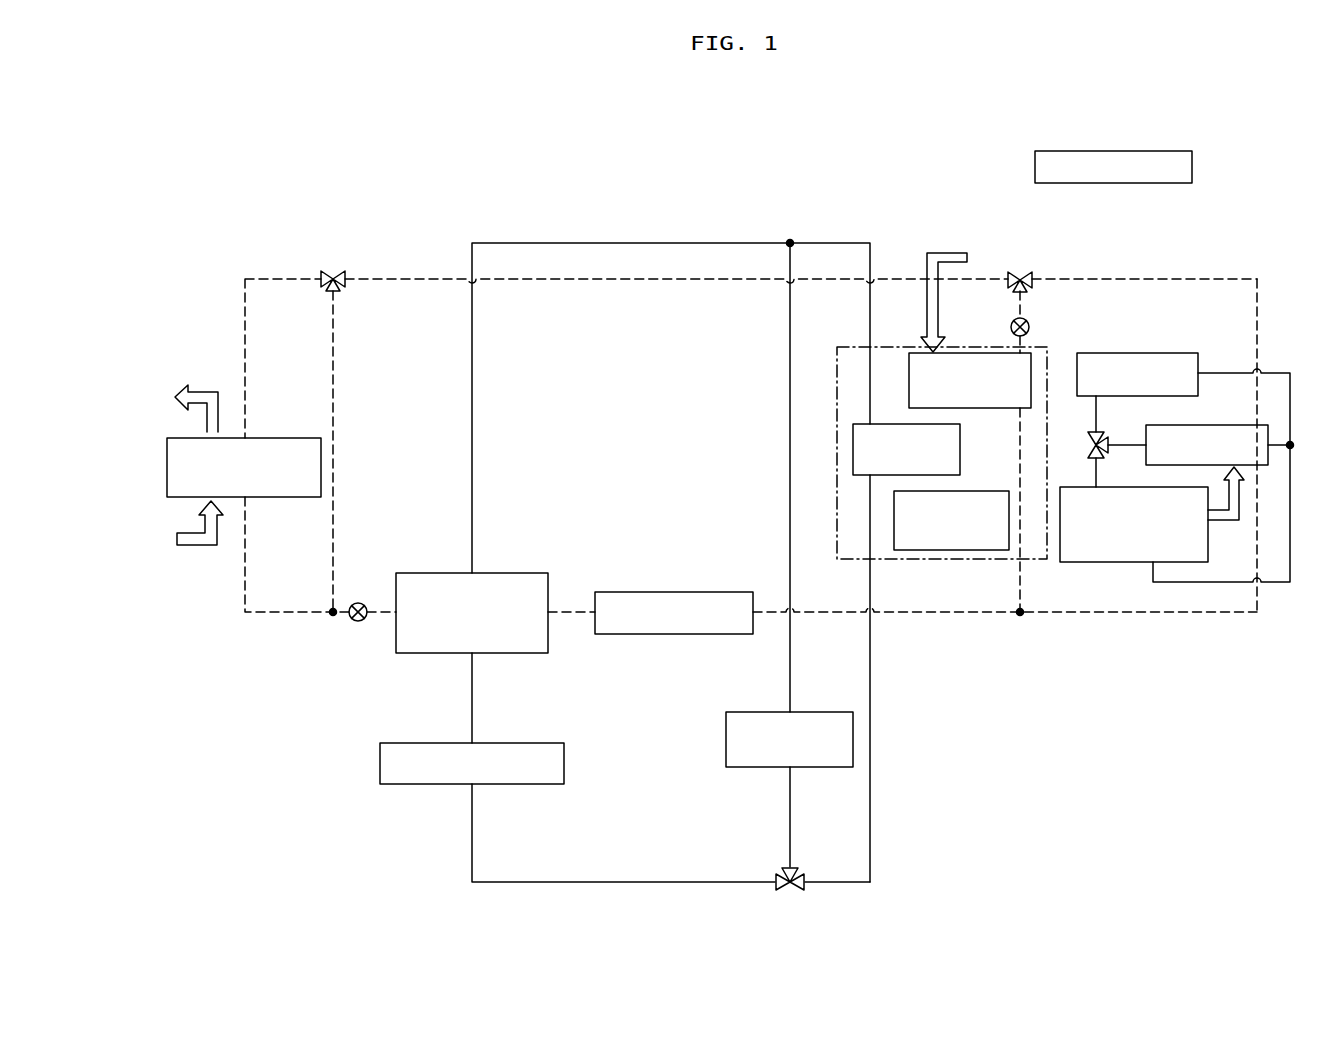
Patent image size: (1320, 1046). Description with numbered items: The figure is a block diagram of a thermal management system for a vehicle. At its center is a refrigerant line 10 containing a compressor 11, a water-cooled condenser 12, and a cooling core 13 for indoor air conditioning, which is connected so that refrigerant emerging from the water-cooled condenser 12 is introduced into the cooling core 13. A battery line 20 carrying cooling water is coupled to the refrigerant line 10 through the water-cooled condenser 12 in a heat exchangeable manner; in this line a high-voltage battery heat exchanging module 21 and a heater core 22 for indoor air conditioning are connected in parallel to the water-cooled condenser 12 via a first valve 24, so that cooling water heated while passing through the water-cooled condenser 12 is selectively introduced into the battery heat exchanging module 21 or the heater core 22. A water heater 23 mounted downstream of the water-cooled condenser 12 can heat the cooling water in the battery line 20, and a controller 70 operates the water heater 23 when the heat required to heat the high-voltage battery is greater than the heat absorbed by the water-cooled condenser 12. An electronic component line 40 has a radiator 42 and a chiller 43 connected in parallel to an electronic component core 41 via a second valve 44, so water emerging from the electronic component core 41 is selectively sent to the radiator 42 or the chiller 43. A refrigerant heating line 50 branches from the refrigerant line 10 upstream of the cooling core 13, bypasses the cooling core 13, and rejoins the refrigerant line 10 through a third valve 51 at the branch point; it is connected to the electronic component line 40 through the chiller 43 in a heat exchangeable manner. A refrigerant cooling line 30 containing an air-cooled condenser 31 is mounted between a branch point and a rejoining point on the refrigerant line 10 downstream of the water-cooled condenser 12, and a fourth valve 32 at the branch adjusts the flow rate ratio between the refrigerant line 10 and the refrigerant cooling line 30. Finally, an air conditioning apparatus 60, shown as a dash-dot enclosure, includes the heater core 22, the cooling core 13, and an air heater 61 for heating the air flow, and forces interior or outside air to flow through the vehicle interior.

The refrigerant line 10 is at (622, 279).
The compressor 11 is at (688, 592).
The water-cooled condenser 12 is at (527, 573).
The cooling core for indoor air conditioning 13 is at (984, 353).
The battery line 20 is at (599, 882).
The high-voltage battery heat exchanging module 21 is at (747, 767).
The heater core for indoor air conditioning 22 is at (862, 424).
The water heater 23 is at (505, 743).
The first valve 24 is at (793, 867).
The refrigerant cooling line 30 is at (245, 327).
The air-cooled condenser 31 is at (275, 438).
The fourth valve 32 is at (327, 272).
The electronic component line 40 is at (1208, 582).
The electronic component core 41 is at (1092, 562).
The radiator 42 is at (1167, 353).
The chiller 43 is at (1260, 425).
The second valve 44 is at (1088, 440).
The refrigerant heating line 50 is at (1188, 279).
The third valve 51 is at (1023, 272).
The air conditioning apparatus 60 is at (910, 559).
The air heater 61 is at (950, 550).
The controller 70 is at (1192, 168).